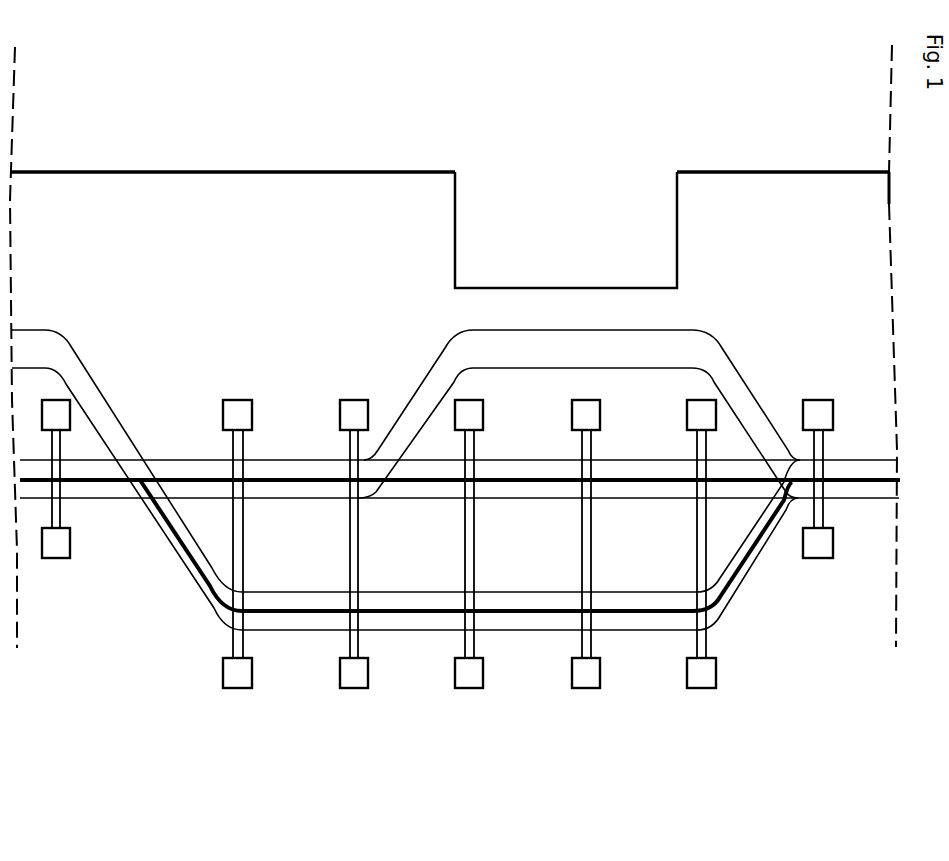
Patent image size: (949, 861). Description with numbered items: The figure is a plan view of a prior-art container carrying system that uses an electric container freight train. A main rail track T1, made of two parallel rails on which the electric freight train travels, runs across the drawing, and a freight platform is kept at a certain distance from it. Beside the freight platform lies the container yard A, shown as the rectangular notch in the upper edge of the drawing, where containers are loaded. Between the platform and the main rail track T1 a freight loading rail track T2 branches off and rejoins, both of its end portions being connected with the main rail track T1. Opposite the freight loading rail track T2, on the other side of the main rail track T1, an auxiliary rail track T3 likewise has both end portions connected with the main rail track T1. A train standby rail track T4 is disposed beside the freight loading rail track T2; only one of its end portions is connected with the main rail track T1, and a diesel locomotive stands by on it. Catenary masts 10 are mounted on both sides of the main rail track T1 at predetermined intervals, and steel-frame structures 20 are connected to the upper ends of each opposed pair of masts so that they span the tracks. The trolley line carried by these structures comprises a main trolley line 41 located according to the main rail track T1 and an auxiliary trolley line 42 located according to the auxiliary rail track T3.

The container yard A is at (566, 230).
The main rail track T1 is at (420, 520).
The freight loading rail track T2 is at (742, 345).
The auxiliary rail track T3 is at (516, 655).
The train standby rail track T4 is at (84, 332).
The catenary mast 10 is at (818, 548).
The steel-frame structure 20 is at (820, 508).
The main trolley line 41 is at (723, 483).
The auxiliary trolley line 42 is at (622, 613).